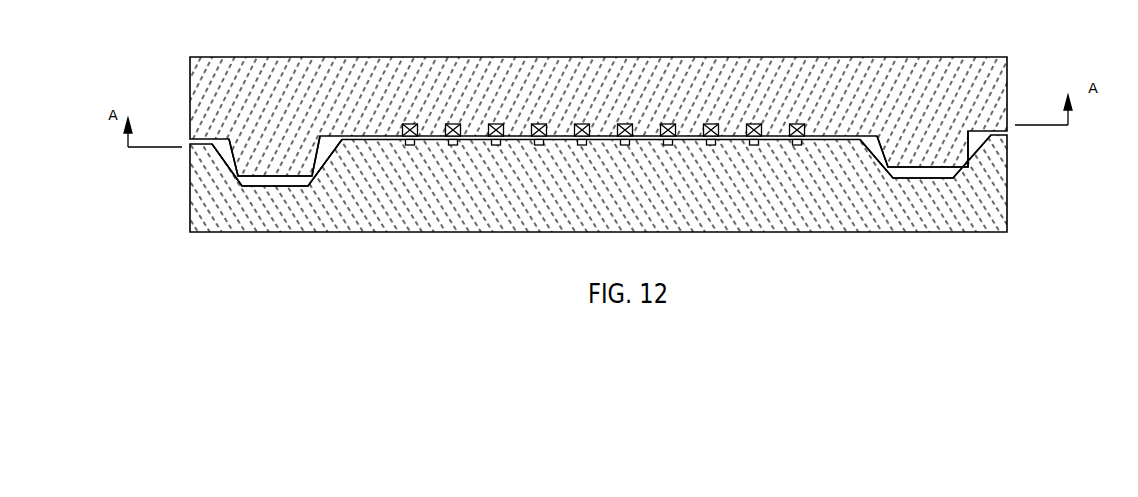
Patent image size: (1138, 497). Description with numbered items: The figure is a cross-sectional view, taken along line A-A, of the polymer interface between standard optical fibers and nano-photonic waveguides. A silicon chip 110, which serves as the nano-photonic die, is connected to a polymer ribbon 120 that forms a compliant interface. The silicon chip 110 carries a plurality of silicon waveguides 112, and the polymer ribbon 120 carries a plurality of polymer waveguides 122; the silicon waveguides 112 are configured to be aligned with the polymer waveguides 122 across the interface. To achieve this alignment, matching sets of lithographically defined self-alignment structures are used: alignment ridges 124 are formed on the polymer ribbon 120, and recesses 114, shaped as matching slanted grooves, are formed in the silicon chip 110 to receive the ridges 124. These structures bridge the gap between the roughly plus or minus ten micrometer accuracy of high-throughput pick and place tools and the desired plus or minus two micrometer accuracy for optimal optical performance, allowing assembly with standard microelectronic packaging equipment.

The silicon chip 110 is at (992, 196).
The silicon waveguides 112 is at (618, 206).
The recesses 114 is at (294, 181).
The polymer ribbon 120 is at (998, 76).
The polymer waveguides 122 is at (589, 80).
The ridges 124 is at (292, 155).